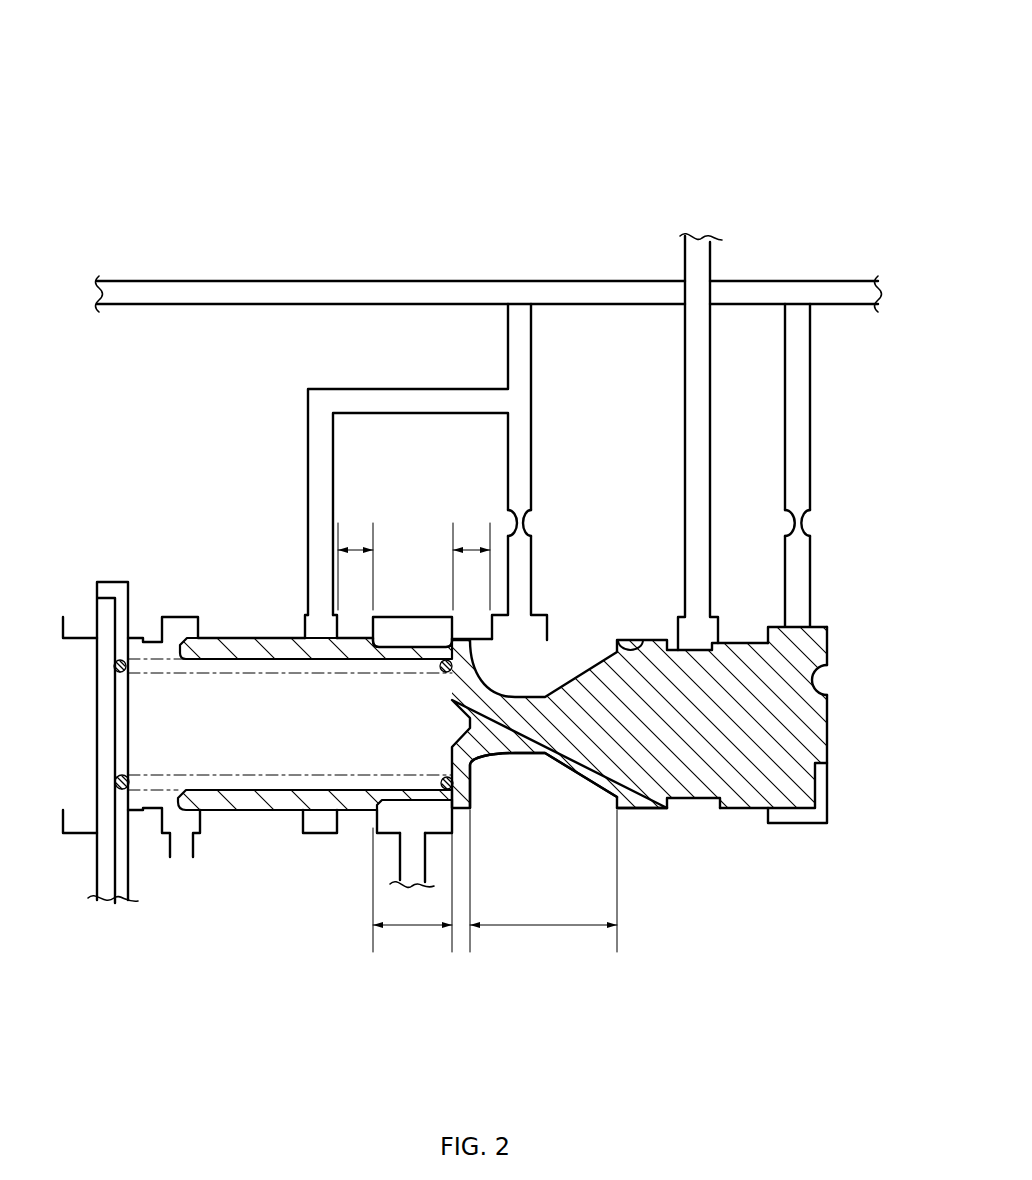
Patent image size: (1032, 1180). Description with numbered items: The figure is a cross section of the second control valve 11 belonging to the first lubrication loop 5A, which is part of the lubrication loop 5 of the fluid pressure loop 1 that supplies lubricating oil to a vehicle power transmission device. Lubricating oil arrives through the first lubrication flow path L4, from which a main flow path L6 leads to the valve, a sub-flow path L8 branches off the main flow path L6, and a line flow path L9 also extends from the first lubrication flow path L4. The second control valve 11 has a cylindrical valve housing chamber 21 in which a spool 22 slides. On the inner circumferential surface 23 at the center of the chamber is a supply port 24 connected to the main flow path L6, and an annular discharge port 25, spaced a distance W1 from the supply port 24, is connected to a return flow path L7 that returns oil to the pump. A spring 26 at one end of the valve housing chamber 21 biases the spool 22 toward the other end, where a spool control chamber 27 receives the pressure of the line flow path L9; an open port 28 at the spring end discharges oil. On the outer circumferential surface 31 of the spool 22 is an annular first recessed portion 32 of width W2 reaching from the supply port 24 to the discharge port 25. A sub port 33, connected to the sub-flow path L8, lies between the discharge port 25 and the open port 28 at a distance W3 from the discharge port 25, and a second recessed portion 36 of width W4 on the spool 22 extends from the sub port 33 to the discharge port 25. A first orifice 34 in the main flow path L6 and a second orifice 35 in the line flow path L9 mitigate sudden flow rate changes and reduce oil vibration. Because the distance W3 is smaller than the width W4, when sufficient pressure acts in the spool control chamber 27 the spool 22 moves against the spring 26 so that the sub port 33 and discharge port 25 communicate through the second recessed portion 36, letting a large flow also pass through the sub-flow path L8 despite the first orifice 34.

The fluid pressure loop 1 is at (207, 70).
The lubrication loop 5 is at (211, 137).
The first lubrication loop 5A is at (196, 270).
The first lubrication flow path L4 is at (265, 279).
The main flow path L6 is at (531, 352).
The return flow path L7 is at (399, 860).
The sub-flow path L8 is at (308, 430).
The line flow path L9 is at (810, 358).
The second control valve 11 is at (634, 822).
The valve housing chamber 21 is at (755, 793).
The spool 22 is at (800, 743).
The inner circumferential surface 23 is at (640, 640).
The supply port 24 is at (548, 625).
The discharge port 25 is at (412, 624).
The spring 26 is at (168, 628).
The spool control chamber 27 is at (803, 678).
The open port 28 is at (200, 820).
The outer circumferential surface 31 is at (655, 812).
The first recessed portion 32 is at (542, 757).
The sub port 33 is at (312, 620).
The first orifice 34 is at (535, 540).
The second orifice 35 is at (812, 540).
The second recessed portion 36 is at (413, 803).
The distance W1 is at (471, 562).
The width W2 is at (543, 886).
The distance W3 is at (355, 562).
The width W4 is at (412, 895).